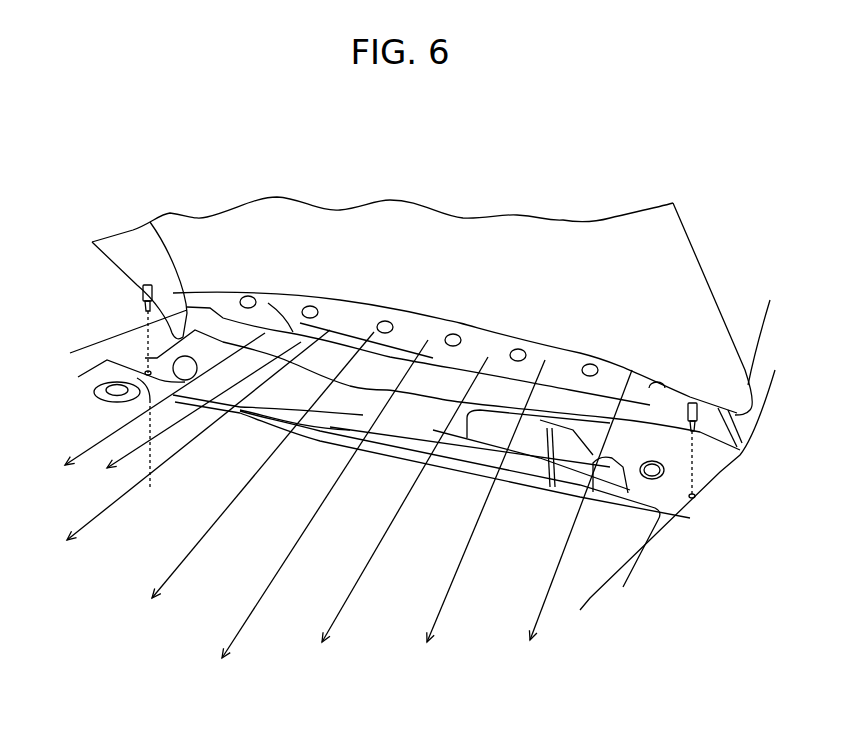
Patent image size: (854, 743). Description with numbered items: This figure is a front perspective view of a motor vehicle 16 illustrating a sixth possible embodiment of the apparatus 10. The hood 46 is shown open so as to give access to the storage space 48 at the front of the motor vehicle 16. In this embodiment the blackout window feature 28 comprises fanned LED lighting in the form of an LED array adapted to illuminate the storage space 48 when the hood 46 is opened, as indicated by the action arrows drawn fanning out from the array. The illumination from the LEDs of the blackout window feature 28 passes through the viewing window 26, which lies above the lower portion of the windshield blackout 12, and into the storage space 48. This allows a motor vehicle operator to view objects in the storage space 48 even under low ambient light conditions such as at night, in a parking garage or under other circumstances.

The apparatus 10 is at (213, 320).
The windshield blackout 12 is at (577, 405).
The motor vehicle 16 is at (698, 542).
The viewing window 26 is at (502, 363).
The blackout window feature 28 is at (248, 296).
The hood 46 is at (535, 250).
The storage space 48 is at (328, 447).